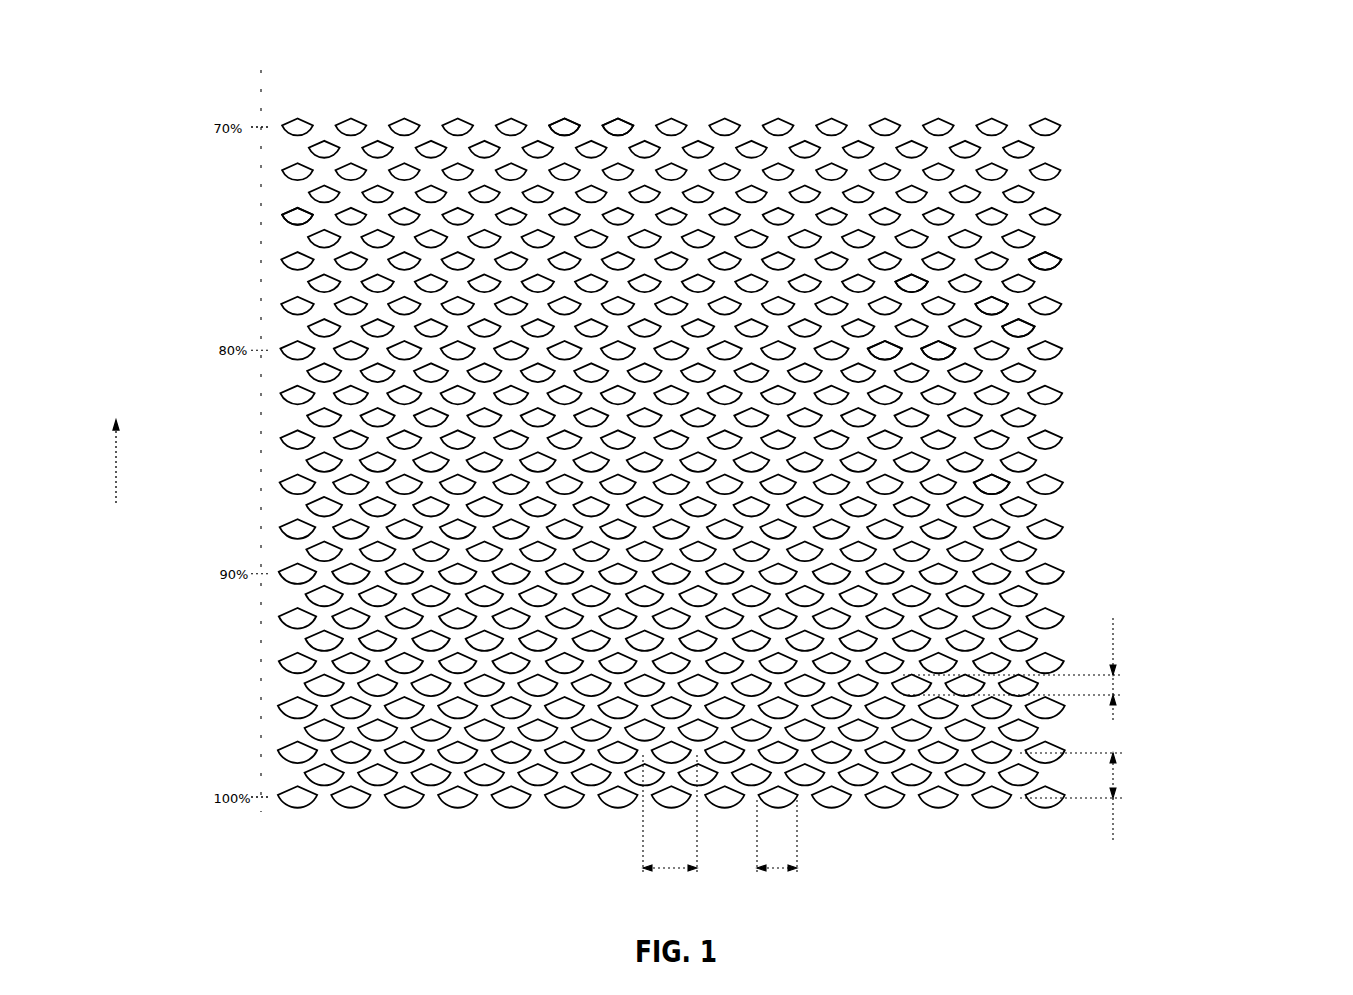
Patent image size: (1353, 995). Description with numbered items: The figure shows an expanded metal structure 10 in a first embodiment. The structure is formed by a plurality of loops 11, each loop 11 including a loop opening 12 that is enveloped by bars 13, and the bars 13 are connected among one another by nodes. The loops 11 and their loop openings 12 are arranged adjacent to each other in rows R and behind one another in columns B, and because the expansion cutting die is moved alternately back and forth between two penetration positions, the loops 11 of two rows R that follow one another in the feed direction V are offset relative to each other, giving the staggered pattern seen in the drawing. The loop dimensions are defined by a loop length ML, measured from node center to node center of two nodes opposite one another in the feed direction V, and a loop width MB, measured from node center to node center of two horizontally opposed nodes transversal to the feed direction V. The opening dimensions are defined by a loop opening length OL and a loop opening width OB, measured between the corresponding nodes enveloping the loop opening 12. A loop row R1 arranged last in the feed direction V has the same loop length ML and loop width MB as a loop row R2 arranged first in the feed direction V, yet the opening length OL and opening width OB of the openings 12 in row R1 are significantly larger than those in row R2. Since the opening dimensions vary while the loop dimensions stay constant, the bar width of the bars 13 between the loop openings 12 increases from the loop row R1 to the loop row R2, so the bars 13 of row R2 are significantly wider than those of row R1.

The expanded metal structure 10 is at (1127, 188).
The loop 11 is at (1045, 280).
The loop opening 12 is at (992, 306).
The loop bar 13 is at (985, 497).
The column B is at (592, 126).
The row R is at (280, 214).
The loop row arranged last in the feed direction R1 is at (207, 797).
The loop row arranged first in the feed direction R2 is at (207, 130).
The feed direction V is at (126, 461).
The loop opening length OL is at (1012, 669).
The loop length ML is at (1071, 798).
The loop width MB is at (670, 815).
The loop opening width OB is at (777, 837).